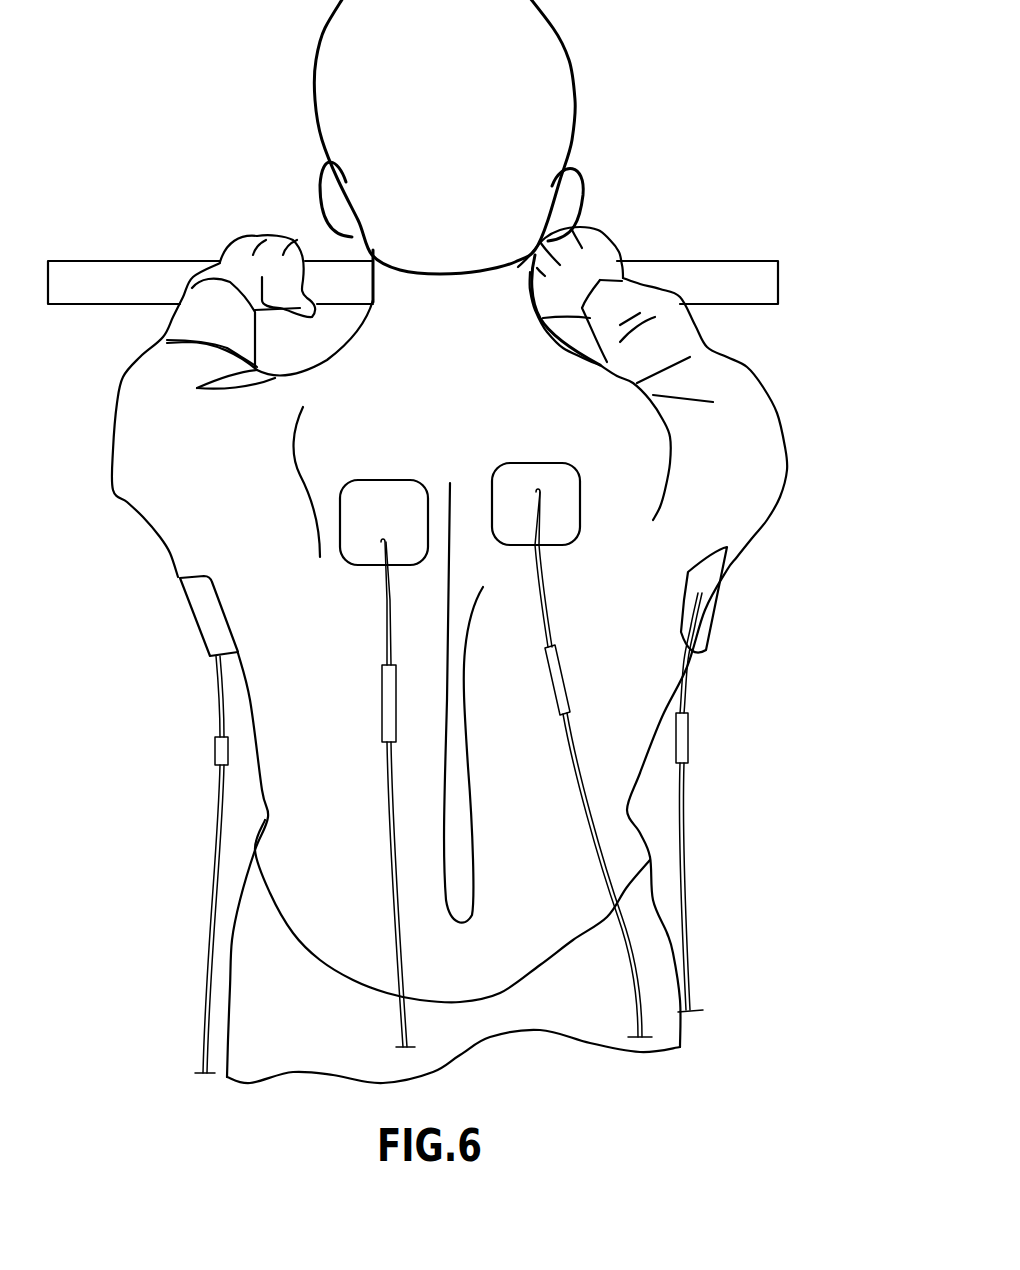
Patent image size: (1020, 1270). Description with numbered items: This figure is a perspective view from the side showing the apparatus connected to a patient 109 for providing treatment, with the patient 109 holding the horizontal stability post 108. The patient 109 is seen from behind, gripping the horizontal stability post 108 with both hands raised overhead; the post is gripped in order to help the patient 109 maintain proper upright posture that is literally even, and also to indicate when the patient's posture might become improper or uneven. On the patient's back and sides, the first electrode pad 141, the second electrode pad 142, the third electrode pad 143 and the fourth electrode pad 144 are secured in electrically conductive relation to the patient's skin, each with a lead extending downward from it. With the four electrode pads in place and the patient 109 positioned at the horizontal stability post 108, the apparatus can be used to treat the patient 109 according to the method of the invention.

The horizontal stability post 108 is at (110, 282).
The patient 109 is at (318, 758).
The first electrode pad 141 is at (377, 508).
The second electrode pad 142 is at (520, 483).
The third electrode pad 143 is at (203, 597).
The fourth electrode pad 144 is at (710, 580).